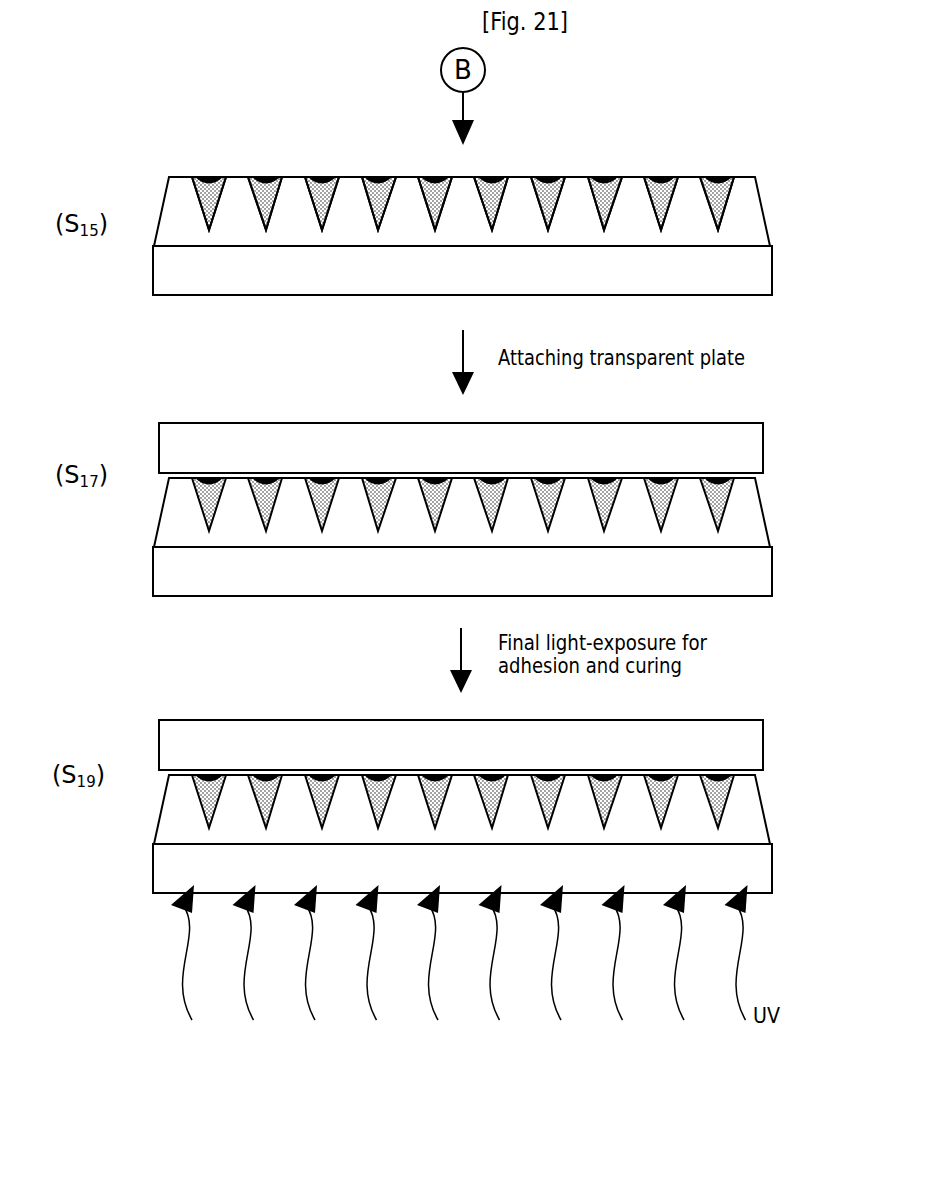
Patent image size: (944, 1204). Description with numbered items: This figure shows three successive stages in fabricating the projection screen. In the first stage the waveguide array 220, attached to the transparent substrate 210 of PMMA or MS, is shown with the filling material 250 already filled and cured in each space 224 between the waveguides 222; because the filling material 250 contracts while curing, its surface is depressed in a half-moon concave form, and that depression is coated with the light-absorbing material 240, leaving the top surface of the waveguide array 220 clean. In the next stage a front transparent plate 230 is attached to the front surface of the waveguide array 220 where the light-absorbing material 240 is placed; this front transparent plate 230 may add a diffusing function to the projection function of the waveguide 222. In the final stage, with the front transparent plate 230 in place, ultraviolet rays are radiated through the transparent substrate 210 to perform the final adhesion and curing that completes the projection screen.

The transparent substrate 210 is at (772, 272).
The waveguide array 220 is at (768, 217).
The waveguide 222 is at (757, 177).
The space 224 is at (275, 196).
The front transparent plate 230 is at (763, 448).
The light-absorbing material 240 is at (258, 177).
The filling material 250 is at (264, 177).